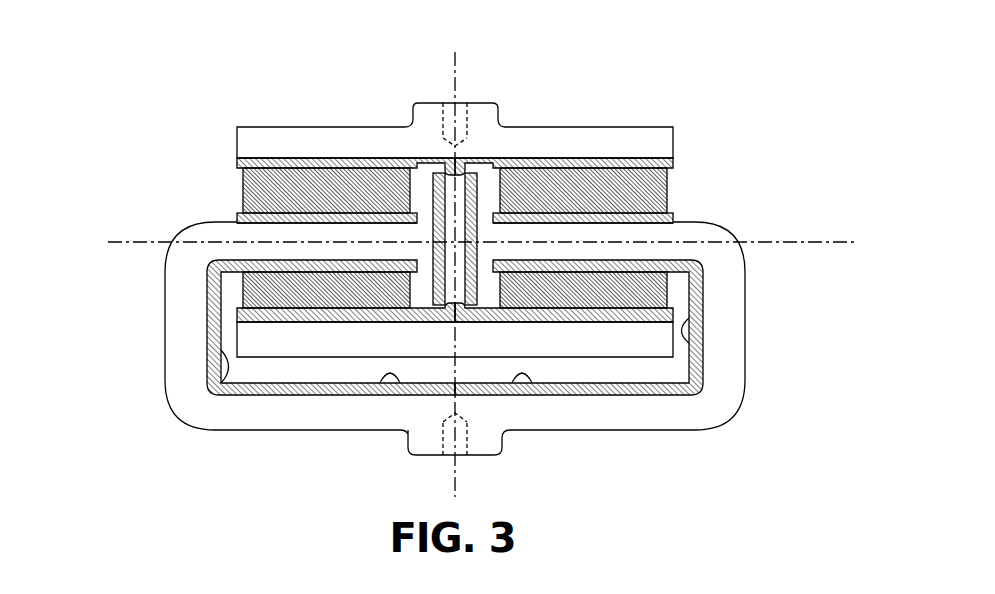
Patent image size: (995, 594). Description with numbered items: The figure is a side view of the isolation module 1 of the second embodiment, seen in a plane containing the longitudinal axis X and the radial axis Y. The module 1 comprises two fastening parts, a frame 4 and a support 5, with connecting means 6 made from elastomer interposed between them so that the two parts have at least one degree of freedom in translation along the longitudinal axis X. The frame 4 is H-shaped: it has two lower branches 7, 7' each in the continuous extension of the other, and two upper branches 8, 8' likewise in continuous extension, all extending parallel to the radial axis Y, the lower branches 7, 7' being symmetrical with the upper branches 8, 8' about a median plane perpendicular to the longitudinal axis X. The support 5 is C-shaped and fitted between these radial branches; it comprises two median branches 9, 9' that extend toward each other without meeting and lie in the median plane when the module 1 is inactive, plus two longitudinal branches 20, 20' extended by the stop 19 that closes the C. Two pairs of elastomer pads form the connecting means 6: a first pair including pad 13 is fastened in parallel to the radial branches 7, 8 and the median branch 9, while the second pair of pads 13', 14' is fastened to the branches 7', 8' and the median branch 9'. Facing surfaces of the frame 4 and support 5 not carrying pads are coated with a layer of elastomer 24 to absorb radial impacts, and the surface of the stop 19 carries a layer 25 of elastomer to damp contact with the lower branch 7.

The isolation module 1 is at (190, 142).
The frame 4 is at (466, 129).
The support 5 is at (455, 366).
The connecting means 6 is at (451, 204).
The lower branch 7 is at (564, 404).
The lower branch 7' is at (346, 403).
The upper branch 8 is at (564, 109).
The upper branch 8' is at (346, 109).
The median branch 9 is at (615, 200).
The median branch 9' is at (266, 211).
The pad 13 is at (675, 287).
The pad 13' is at (412, 204).
The pad 14' is at (235, 178).
The stop 19 is at (342, 415).
The longitudinal branch 20 is at (639, 284).
The longitudinal branch 20' is at (280, 285).
The layer of elastomer 24 is at (230, 385).
The layer of elastomer 25 is at (380, 385).
The longitudinal axis X is at (460, 77).
The radial axis Y is at (815, 242).